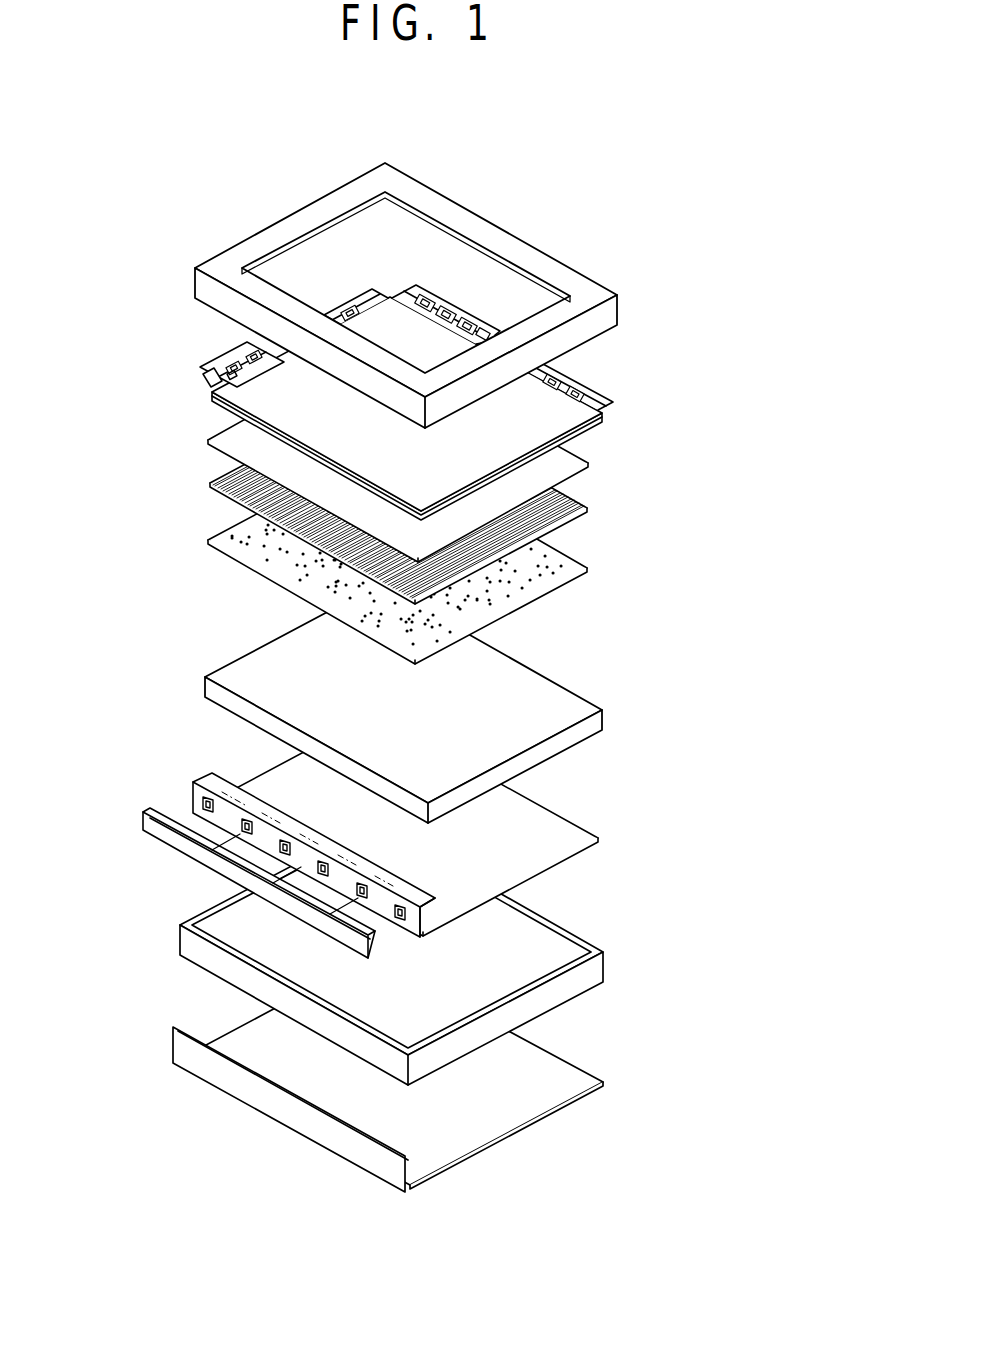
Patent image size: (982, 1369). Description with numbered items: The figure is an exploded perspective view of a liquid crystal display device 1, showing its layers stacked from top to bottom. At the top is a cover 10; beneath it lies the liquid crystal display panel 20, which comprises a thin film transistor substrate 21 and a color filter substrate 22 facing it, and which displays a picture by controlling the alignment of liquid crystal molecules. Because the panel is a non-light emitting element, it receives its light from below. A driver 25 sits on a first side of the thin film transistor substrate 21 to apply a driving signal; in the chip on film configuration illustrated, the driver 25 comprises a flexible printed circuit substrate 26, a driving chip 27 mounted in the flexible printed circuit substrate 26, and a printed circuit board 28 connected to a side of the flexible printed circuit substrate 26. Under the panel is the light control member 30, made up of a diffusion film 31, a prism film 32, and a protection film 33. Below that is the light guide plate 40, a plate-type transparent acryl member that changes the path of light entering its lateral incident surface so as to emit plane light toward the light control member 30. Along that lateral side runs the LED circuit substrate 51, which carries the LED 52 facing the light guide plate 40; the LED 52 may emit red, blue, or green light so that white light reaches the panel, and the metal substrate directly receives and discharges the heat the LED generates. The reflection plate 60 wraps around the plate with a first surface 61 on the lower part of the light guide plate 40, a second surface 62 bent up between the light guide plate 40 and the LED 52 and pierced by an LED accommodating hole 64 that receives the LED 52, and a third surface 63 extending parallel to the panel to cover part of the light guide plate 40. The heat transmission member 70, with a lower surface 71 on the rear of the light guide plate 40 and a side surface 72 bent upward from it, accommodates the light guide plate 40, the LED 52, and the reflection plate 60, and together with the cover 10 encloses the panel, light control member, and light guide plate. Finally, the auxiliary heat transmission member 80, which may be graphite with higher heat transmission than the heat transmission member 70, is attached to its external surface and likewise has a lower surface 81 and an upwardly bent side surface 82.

The liquid crystal display device 1 is at (112, 235).
The cover 10 is at (617, 311).
The liquid crystal display panel 20 is at (391, 402).
The thin film transistor substrate 21 is at (600, 416).
The color filter substrate 22 is at (605, 405).
The driver 25 is at (171, 369).
The flexible printed circuit substrate 26 is at (210, 380).
The driving chip 27 is at (228, 374).
The printed circuit board 28 is at (235, 352).
The light control member 30 is at (465, 504).
The diffusion film 31 is at (585, 567).
The prism film 32 is at (585, 511).
The protection film 33 is at (683, 570).
The light guide plate 40 is at (580, 707).
The LED circuit substrate 51 is at (173, 842).
The LED 52 is at (152, 823).
The reflection plate 60 is at (385, 823).
The first surface 61 is at (580, 823).
The second surface 62 is at (432, 928).
The third surface 63 is at (437, 910).
The LED accommodating hole 64 is at (383, 847).
The heat transmission member 70 is at (384, 953).
The lower surface 71 is at (250, 920).
The side surface 72 is at (177, 948).
The auxiliary heat transmission member 80 is at (423, 1100).
The lower surface 81 is at (498, 1122).
The side surface 82 is at (408, 1175).